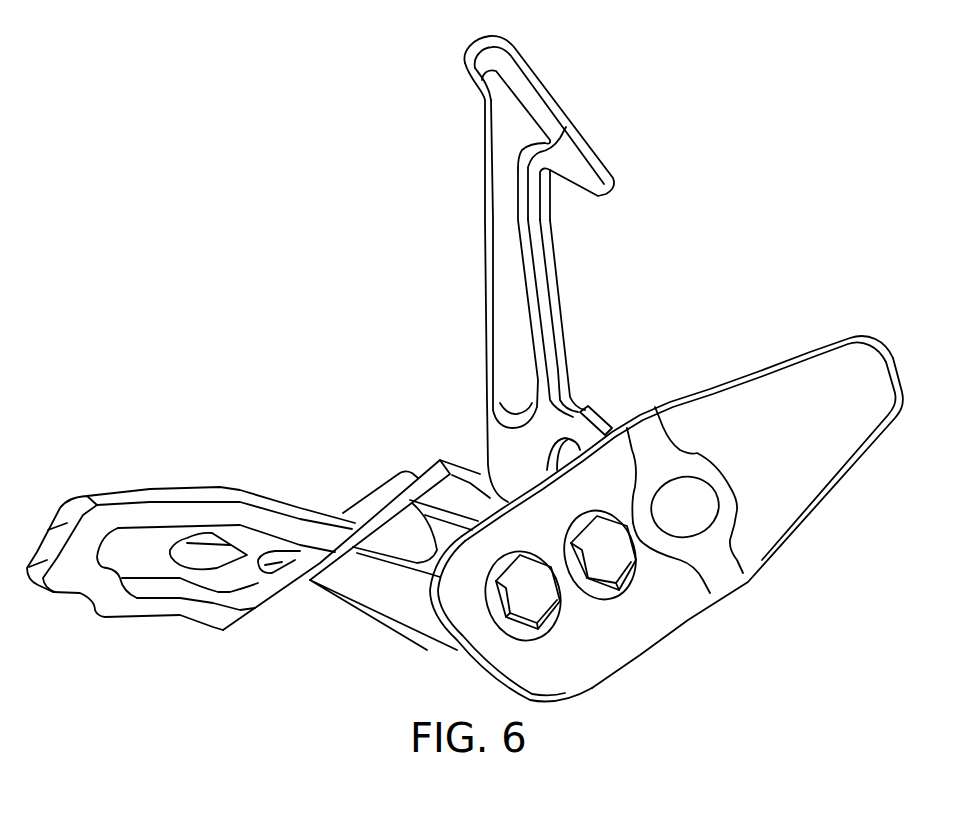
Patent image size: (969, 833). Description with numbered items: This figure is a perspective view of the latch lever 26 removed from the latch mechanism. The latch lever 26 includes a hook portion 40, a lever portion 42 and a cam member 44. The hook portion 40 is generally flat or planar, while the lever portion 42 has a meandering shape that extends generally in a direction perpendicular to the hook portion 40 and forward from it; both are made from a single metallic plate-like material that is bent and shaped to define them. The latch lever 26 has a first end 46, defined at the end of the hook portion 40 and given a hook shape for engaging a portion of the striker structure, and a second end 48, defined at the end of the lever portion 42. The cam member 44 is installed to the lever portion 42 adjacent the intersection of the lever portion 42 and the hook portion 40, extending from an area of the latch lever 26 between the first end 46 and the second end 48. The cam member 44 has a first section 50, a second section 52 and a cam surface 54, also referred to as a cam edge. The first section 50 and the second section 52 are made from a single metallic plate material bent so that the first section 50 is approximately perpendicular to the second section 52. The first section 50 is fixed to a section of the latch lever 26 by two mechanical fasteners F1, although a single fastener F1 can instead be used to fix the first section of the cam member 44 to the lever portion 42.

The latch lever 26 is at (767, 188).
The hook portion 40 is at (560, 284).
The lever portion 42 is at (255, 615).
The cam member 44 is at (857, 390).
The first end 46 is at (513, 121).
The second end 48 is at (62, 572).
The first section 50 is at (587, 646).
The second section 52 is at (848, 471).
The cam surface 54 is at (794, 360).
The mechanical fastener F1 is at (603, 543).